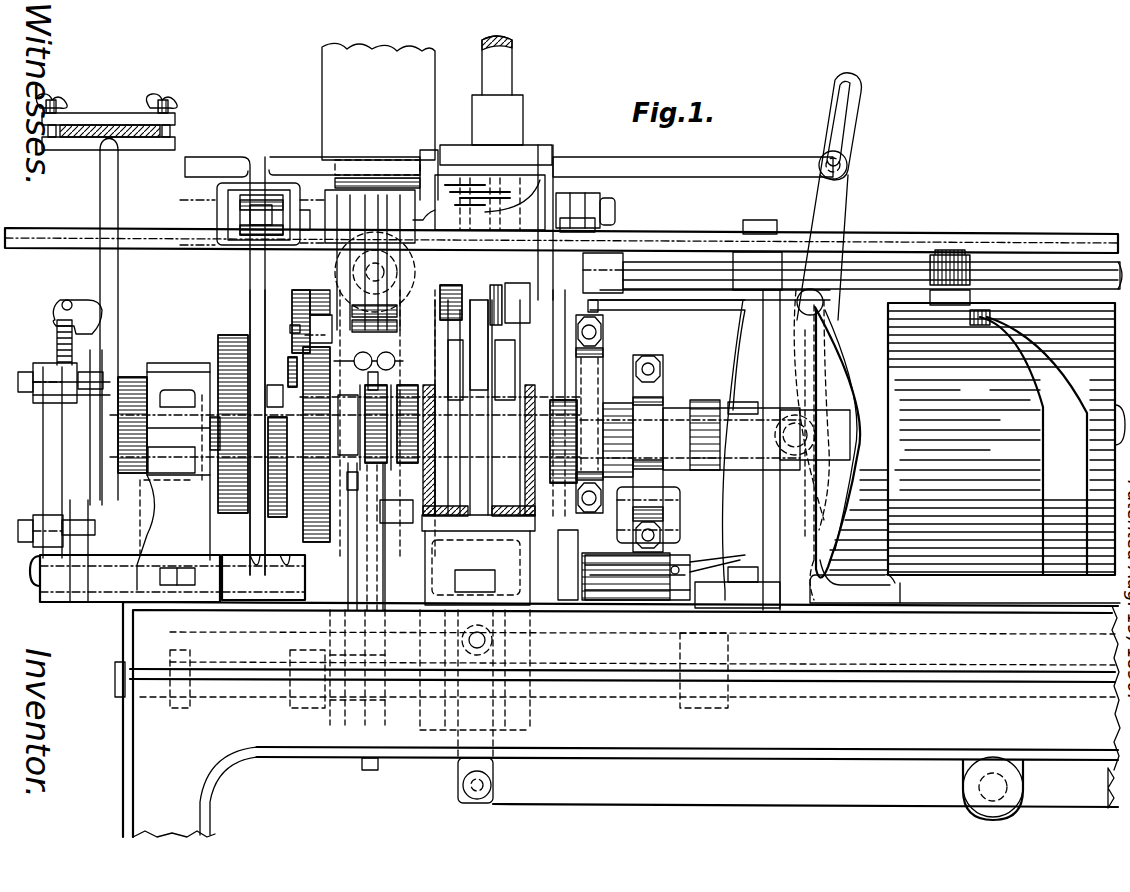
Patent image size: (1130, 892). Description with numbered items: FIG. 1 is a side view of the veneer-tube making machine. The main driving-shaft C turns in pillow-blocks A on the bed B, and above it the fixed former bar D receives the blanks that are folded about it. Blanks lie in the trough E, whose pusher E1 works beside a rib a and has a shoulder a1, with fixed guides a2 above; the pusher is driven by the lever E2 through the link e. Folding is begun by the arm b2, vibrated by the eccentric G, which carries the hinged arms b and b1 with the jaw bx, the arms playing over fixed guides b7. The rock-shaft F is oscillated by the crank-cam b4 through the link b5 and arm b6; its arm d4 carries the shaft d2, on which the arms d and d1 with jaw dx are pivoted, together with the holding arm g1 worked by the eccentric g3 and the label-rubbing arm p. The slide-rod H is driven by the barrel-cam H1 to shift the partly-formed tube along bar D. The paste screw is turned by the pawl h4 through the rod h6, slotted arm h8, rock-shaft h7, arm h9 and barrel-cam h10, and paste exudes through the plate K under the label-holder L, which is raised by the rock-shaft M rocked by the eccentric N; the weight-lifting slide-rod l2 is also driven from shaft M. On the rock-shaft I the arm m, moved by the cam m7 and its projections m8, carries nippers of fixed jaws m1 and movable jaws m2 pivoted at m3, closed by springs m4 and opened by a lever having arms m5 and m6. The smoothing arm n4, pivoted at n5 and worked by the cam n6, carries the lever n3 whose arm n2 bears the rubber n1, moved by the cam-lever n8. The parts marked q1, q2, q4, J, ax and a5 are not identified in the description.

The former bar D is at (165, 238).
The clamp q1 is at (115, 122).
The clamp bar q2 is at (118, 262).
The spring q4 is at (58, 345).
The link b5 is at (48, 422).
The crank-cam b4 is at (92, 435).
The arm b6 is at (78, 551).
The blank trough E is at (32, 576).
The pillow-blocks A is at (190, 500).
The lateral arm n2 is at (282, 172).
The lever n3 is at (275, 525).
The rubber n1 is at (336, 182).
The arm p is at (428, 170).
The label holder L is at (378, 101).
The upright slide-rod l2 is at (506, 82).
The folding jaw dx is at (496, 155).
The folding arm d is at (548, 152).
The folding jaw bx is at (490, 202).
The folding arm d1 is at (512, 194).
The fixed jaws m1 is at (440, 212).
The rod h6 is at (592, 165).
The folding arm b is at (575, 204).
The fixed guides b7 is at (556, 252).
The folding arm b1 is at (567, 403).
The slide-rod H is at (700, 284).
The slotted arm h8 is at (829, 196).
The rock-shaft h7 is at (811, 409).
The pawl h4 is at (794, 435).
The arm h9 is at (802, 452).
The barrel-cam h10 is at (847, 442).
The main driving-shaft C is at (812, 435).
The barrel-cam H1 is at (967, 453).
The bearing J is at (950, 285).
The nipper arm m is at (337, 264).
The movable jaws m2 is at (375, 269).
The level plate K is at (328, 330).
The lever arm m5 is at (300, 315).
The pivot m3 is at (374, 302).
The holding arm g1 is at (368, 347).
The springs m4 is at (388, 379).
The cam m7 is at (316, 444).
The projections m8 is at (364, 419).
The eccentric g3 is at (372, 468).
The arm d4 is at (380, 536).
The pusher E1 is at (478, 452).
The central rib a is at (479, 351).
The shoulder a1 is at (481, 359).
The gear ax is at (449, 302).
The fixed guides a2 is at (510, 304).
The gear a5 is at (563, 441).
The eccentric G is at (589, 414).
The vibrating arm b2 is at (598, 310).
The shaft d2 is at (614, 536).
The eccentric N is at (690, 453).
The rock-shaft M is at (661, 515).
The rock-shaft F is at (665, 570).
The cam n6 is at (205, 424).
The vibrating arm n4 is at (258, 432).
The pivot n5 is at (248, 513).
The cam-lever n8 is at (283, 363).
The lever end m6 is at (288, 321).
The main frame B is at (621, 719).
The rock-shaft I is at (114, 680).
The lever E2 is at (659, 791).
The link e is at (456, 764).